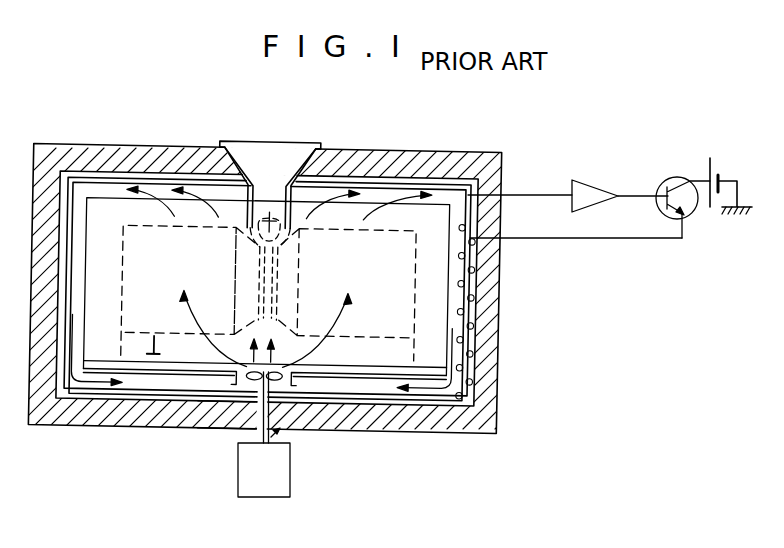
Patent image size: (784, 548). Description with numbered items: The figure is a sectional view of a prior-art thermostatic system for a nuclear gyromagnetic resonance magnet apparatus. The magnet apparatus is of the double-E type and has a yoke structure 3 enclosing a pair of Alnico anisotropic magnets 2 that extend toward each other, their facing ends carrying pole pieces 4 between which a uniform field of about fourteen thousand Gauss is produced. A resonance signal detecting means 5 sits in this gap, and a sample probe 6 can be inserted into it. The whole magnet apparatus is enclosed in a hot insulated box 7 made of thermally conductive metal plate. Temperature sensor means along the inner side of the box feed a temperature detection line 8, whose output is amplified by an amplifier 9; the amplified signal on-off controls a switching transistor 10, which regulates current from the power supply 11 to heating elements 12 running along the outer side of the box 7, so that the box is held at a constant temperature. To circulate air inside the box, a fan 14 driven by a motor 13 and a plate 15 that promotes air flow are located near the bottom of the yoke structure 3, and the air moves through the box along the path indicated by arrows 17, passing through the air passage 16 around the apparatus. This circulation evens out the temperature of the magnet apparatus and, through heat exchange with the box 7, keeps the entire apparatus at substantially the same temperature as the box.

The Alnico anisotropic magnets 2 is at (268, 293).
The yoke structure 3 is at (266, 287).
The pole pieces 4 is at (263, 274).
The resonance signal detecting means 5 is at (270, 298).
The sample probe 6 is at (270, 192).
The hot insulated box 7 is at (471, 401).
The temperature detection line 8 is at (463, 262).
The amplifier 9 is at (602, 182).
The switching transistor 10 is at (673, 178).
The power source 11 is at (716, 170).
The heating elements 12 is at (480, 260).
The motor 13 is at (291, 468).
The fan 14 is at (224, 412).
The plate 15 is at (143, 378).
The fan 16 is at (214, 345).
The arrows 17 is at (386, 188).